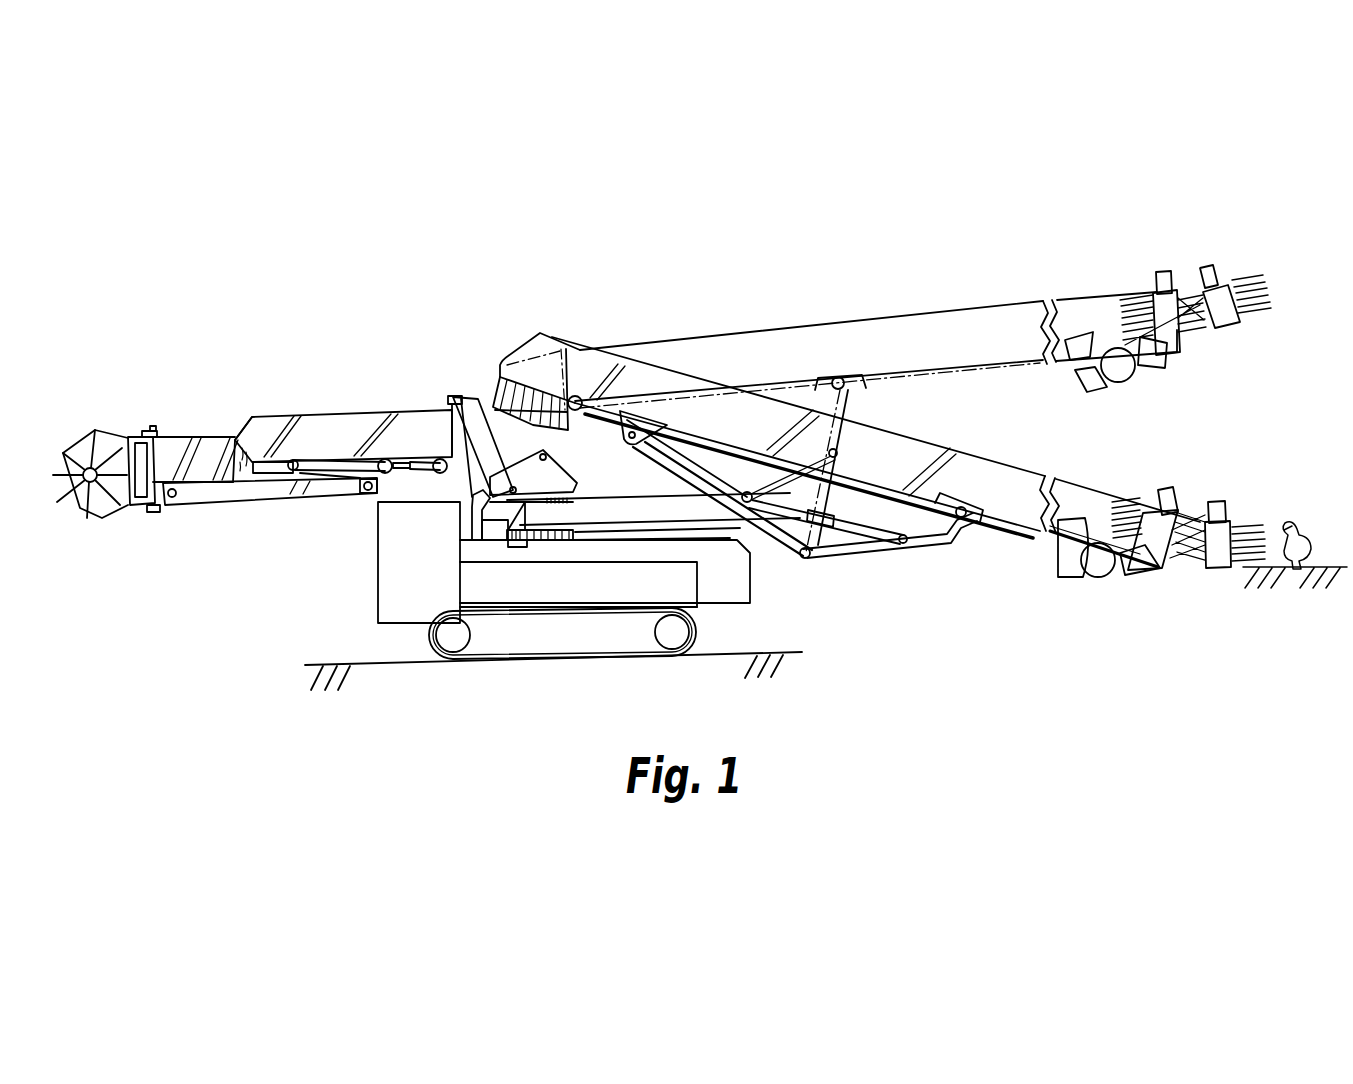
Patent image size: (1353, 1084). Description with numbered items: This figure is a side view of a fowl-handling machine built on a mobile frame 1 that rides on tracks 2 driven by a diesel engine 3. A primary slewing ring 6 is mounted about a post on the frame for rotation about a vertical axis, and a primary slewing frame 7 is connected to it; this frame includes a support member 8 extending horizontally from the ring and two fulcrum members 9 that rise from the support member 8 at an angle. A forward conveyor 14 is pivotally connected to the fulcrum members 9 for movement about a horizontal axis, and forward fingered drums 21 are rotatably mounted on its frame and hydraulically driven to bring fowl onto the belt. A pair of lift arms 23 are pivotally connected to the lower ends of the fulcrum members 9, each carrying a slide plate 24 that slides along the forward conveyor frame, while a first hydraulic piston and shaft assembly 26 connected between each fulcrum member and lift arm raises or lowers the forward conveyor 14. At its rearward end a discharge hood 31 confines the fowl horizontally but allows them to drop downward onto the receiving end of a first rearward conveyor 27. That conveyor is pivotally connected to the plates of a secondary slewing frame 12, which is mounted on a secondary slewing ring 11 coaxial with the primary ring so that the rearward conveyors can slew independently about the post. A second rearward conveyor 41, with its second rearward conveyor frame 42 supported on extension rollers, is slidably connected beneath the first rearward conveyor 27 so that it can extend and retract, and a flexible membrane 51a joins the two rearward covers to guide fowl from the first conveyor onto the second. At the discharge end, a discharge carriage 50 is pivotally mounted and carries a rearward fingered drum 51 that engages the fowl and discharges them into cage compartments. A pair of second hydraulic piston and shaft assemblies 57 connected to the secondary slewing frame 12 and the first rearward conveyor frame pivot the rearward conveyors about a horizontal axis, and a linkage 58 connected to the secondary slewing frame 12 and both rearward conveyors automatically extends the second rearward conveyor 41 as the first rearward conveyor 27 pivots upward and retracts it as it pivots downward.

The mobile frame 1 is at (714, 624).
The tracks 2 is at (430, 656).
The diesel engine 3 is at (378, 573).
The primary slewing ring 6 is at (700, 520).
The primary slewing frame 7 is at (765, 548).
The support member 8 is at (655, 500).
The fulcrum members 9 is at (698, 460).
The secondary slewing ring 11 is at (575, 501).
The secondary slewing frame 12 is at (577, 476).
The forward conveyor 14 is at (787, 323).
The forward fingered drums 21 is at (1233, 281).
The lift arms 23 is at (870, 540).
The slide plate 24 is at (860, 392).
The first hydraulic piston and shaft assembly 26 is at (825, 510).
The first rearward conveyor 27 is at (317, 413).
The discharge hood 31 is at (538, 335).
The second rearward conveyor 41 is at (183, 434).
The second rearward conveyor frame 42 is at (268, 504).
The discharge carriage 50 is at (97, 430).
The rearward fingered drum 51 is at (88, 500).
The flexible membrane 51a is at (242, 416).
The second hydraulic piston and shaft assemblies 57 is at (480, 485).
The linkage 58 is at (477, 397).